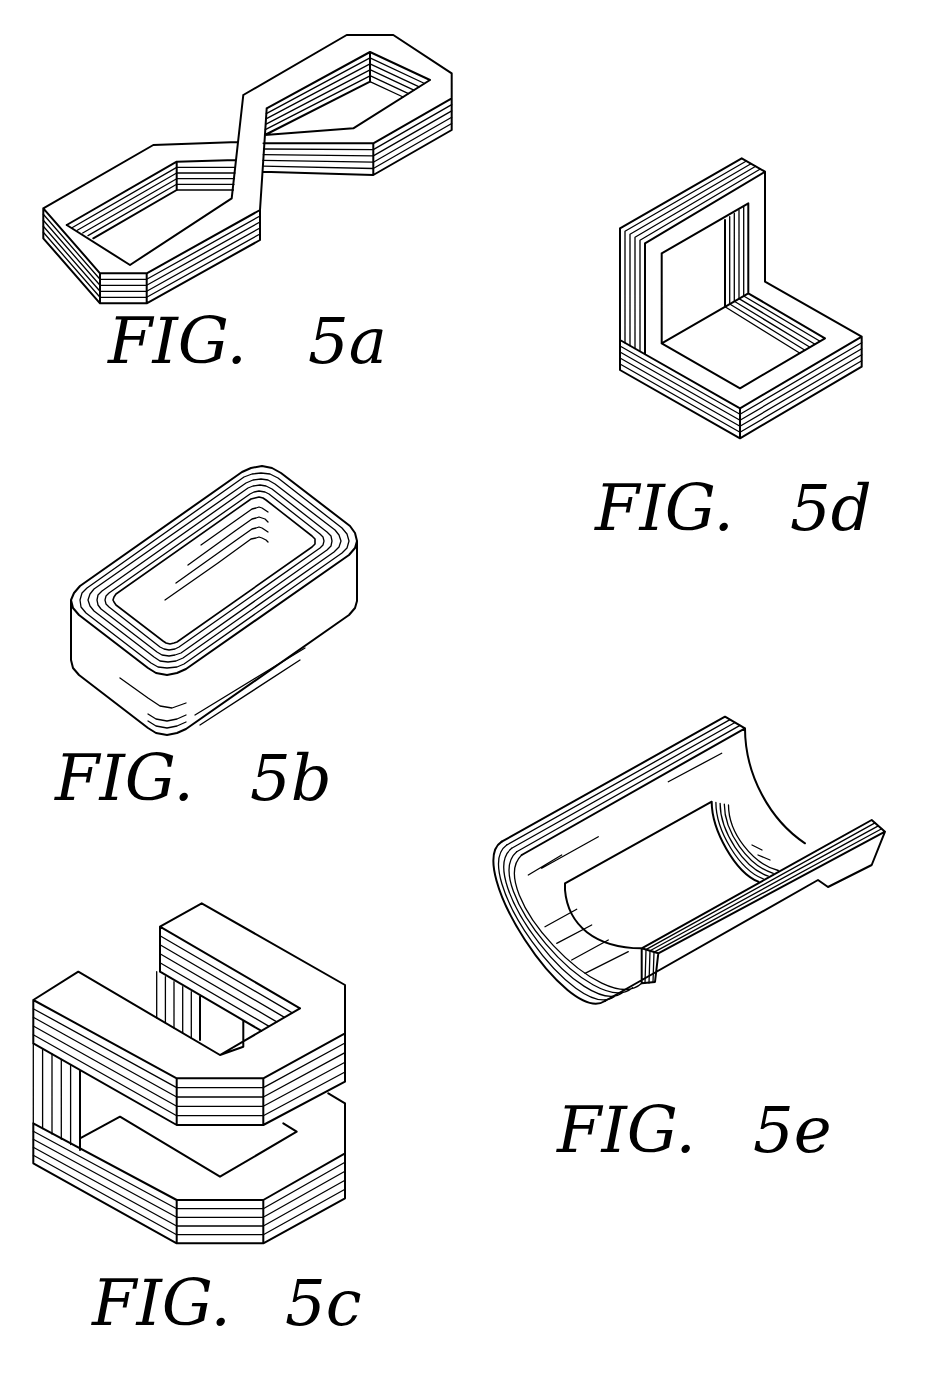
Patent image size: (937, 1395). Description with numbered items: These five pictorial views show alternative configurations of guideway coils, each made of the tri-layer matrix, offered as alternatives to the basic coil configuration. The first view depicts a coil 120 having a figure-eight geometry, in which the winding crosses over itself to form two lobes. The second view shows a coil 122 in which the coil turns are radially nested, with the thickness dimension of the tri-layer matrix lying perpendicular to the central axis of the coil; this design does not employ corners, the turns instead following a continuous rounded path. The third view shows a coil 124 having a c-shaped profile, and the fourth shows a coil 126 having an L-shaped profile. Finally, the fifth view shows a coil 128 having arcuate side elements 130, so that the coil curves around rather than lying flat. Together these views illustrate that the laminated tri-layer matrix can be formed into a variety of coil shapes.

In FIG. 5A, the coil 120 is at (490, 95).
In FIG. 5B, the coil 122 is at (328, 493).
In FIG. 5C, the coil 124 is at (283, 933).
In FIG. 5D, the coil 126 is at (745, 157).
In FIG. 5E, the coil 128 is at (689, 860).
In FIG. 5E, the arcuate side elements 130 is at (597, 1001).